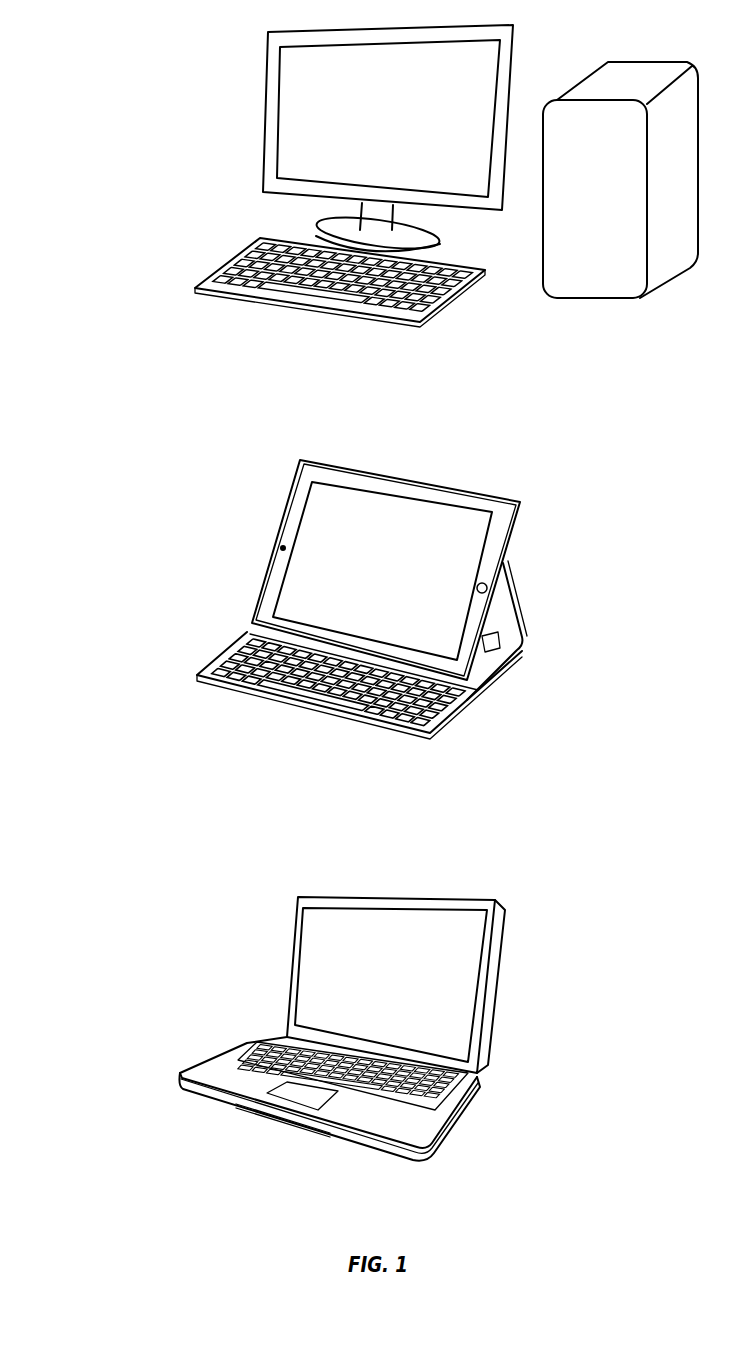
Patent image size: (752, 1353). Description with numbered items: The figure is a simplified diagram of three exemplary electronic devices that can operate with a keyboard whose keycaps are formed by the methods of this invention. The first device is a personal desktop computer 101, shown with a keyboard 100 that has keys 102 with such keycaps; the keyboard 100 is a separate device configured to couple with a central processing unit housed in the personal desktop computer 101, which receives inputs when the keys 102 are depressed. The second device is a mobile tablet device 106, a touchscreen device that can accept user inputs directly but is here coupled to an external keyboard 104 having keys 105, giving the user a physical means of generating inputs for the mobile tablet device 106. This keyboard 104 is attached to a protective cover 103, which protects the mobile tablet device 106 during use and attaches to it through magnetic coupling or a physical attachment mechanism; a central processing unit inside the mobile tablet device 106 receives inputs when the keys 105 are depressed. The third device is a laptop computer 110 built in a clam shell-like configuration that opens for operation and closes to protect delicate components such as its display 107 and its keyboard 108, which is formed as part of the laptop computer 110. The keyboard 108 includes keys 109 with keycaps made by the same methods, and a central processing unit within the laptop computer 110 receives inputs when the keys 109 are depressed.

The keyboard 100 is at (220, 275).
The personal desktop computer 101 is at (612, 207).
The keys 102 is at (462, 293).
The protective cover 103 is at (505, 620).
The keyboard 104 is at (217, 662).
The keys 105 is at (465, 700).
The mobile tablet device 106 is at (492, 550).
The display 107 is at (408, 985).
The keyboard 108 is at (260, 1052).
The keys 109 is at (467, 1077).
The laptop computer 110 is at (425, 1128).